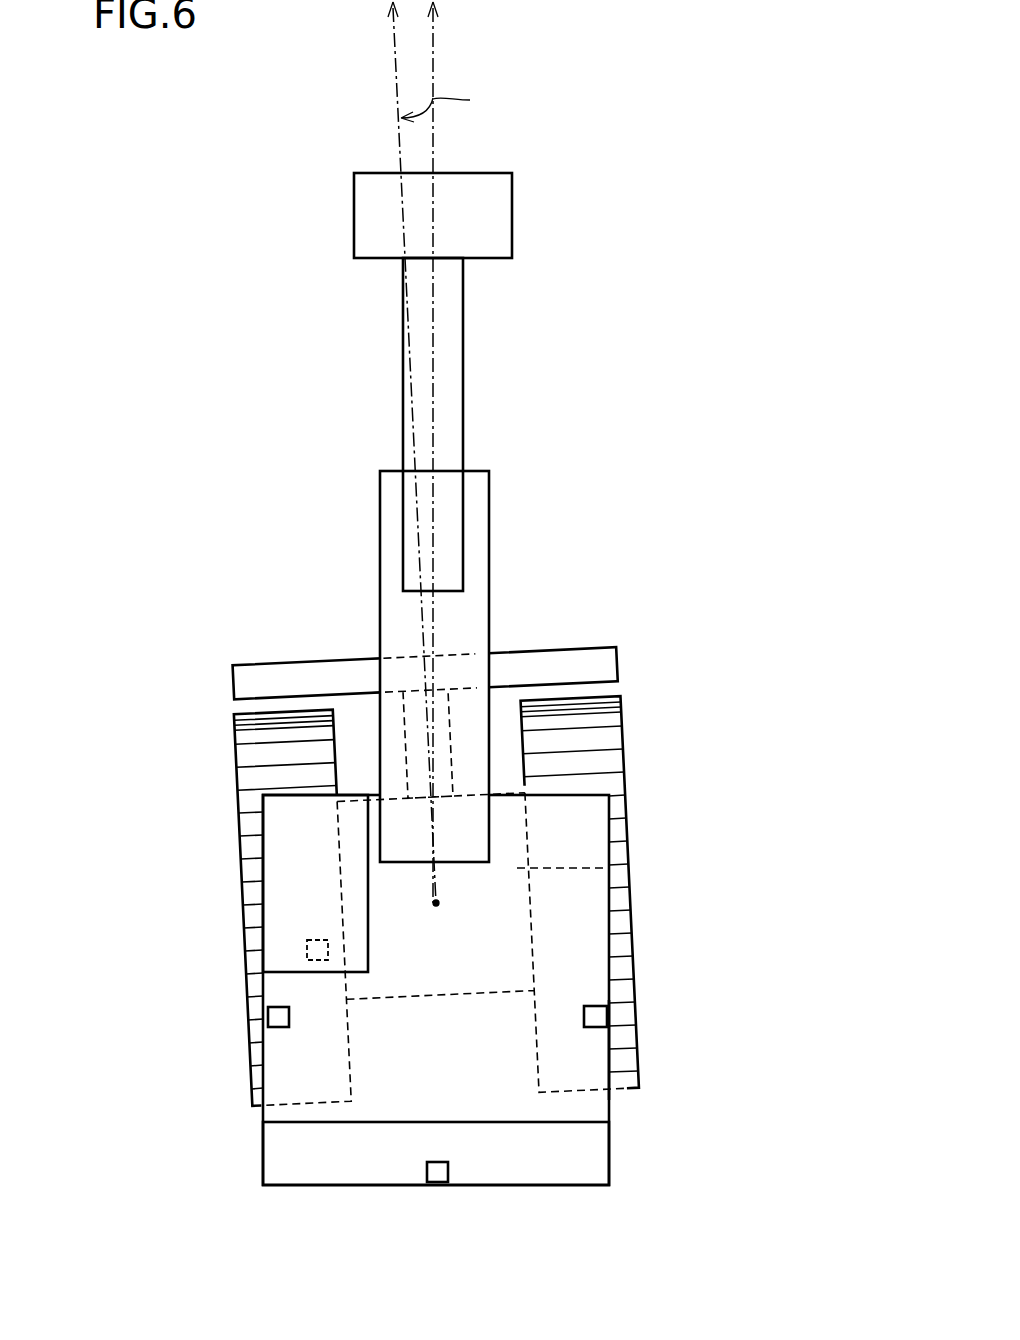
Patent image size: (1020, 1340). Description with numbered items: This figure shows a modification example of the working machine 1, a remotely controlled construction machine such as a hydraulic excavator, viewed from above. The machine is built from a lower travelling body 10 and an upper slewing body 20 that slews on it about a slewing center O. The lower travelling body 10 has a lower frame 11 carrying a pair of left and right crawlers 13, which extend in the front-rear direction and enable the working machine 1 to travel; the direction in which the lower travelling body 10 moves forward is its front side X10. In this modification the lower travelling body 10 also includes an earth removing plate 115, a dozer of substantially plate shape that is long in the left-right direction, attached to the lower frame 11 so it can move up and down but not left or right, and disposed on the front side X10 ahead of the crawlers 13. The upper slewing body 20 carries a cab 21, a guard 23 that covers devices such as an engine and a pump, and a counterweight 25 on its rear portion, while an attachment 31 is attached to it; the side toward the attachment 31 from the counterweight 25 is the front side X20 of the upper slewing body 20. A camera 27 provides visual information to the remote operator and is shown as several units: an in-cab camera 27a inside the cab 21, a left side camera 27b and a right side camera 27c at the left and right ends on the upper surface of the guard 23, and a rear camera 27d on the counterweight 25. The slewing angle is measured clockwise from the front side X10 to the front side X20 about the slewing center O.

The working machine 1 is at (721, 142).
The lower travelling body 10 is at (608, 742).
The lower frame 11 is at (609, 868).
The crawlers 13 is at (245, 717).
The upper slewing body 20 is at (603, 815).
The cab 21 is at (280, 877).
The guard 23 is at (604, 1048).
The counterweight 25 is at (600, 1147).
The camera 27 is at (443, 1105).
The in-cab camera 27a is at (307, 942).
The left side camera 27b is at (268, 1016).
The right side camera 27c is at (600, 1020).
The rear camera 27d is at (437, 1183).
The attachment 31 is at (483, 512).
The earth removing plate 115 is at (243, 678).
The slewing center O is at (436, 903).
The front side of the lower travelling body X10 is at (385, 452).
The front side of the upper slewing body X20 is at (462, 452).